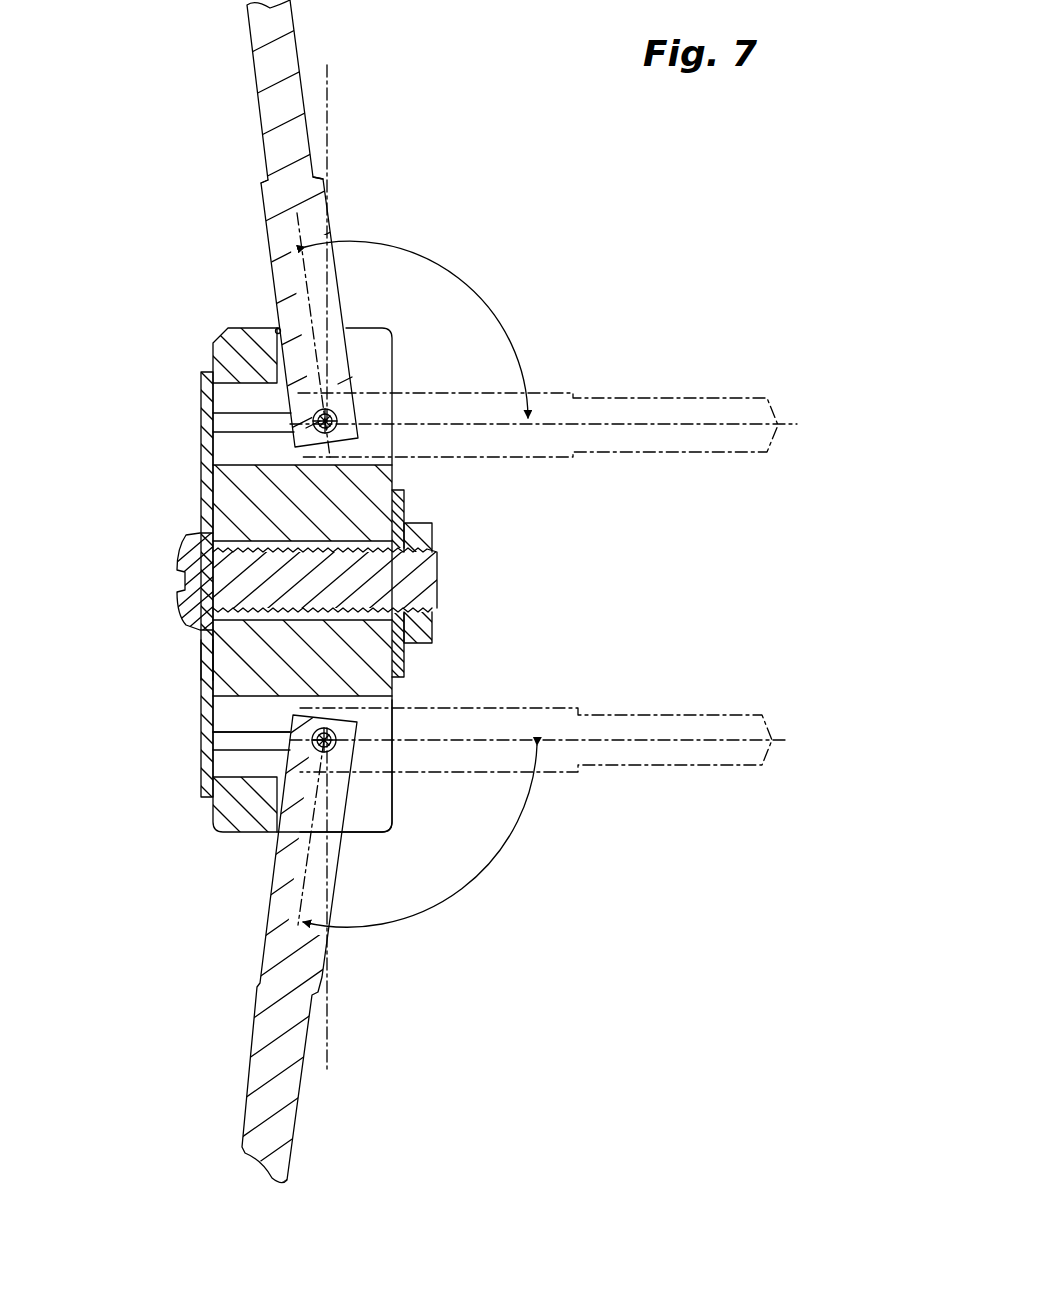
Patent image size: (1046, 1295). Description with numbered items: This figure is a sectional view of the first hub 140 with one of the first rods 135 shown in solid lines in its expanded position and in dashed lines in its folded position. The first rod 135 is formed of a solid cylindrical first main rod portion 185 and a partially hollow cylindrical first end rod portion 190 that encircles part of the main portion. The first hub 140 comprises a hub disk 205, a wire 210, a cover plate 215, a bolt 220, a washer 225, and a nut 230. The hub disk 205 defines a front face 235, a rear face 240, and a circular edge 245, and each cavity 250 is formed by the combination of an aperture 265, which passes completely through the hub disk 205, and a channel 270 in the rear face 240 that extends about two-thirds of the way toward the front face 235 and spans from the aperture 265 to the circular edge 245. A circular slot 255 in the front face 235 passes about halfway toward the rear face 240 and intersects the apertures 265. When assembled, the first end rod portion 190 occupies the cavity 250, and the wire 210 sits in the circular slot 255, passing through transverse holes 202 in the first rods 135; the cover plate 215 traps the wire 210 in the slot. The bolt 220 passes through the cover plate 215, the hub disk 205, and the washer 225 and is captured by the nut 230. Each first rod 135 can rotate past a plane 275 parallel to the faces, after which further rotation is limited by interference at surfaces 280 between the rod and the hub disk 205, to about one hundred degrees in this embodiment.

The first rod 135 is at (180, 105).
The first hub 140 is at (100, 328).
The first main rod portion 185 is at (250, 50).
The first end rod portion 190 is at (262, 200).
The circular edge 245 is at (230, 326).
The surfaces 280 is at (276, 329).
The channel 270 is at (378, 358).
The wire 210 is at (337, 417).
The transverse holes 202 is at (358, 436).
The front face 235 is at (201, 400).
The aperture 265 is at (214, 445).
The bolt 220 is at (182, 566).
The nut 230 is at (430, 546).
The cover plate 215 is at (201, 655).
The washer 225 is at (405, 661).
The circular slot 255 is at (227, 740).
The rear face 240 is at (392, 817).
The cavity 250 is at (360, 796).
The hub disk 205 is at (213, 847).
The plane 275 is at (328, 1060).